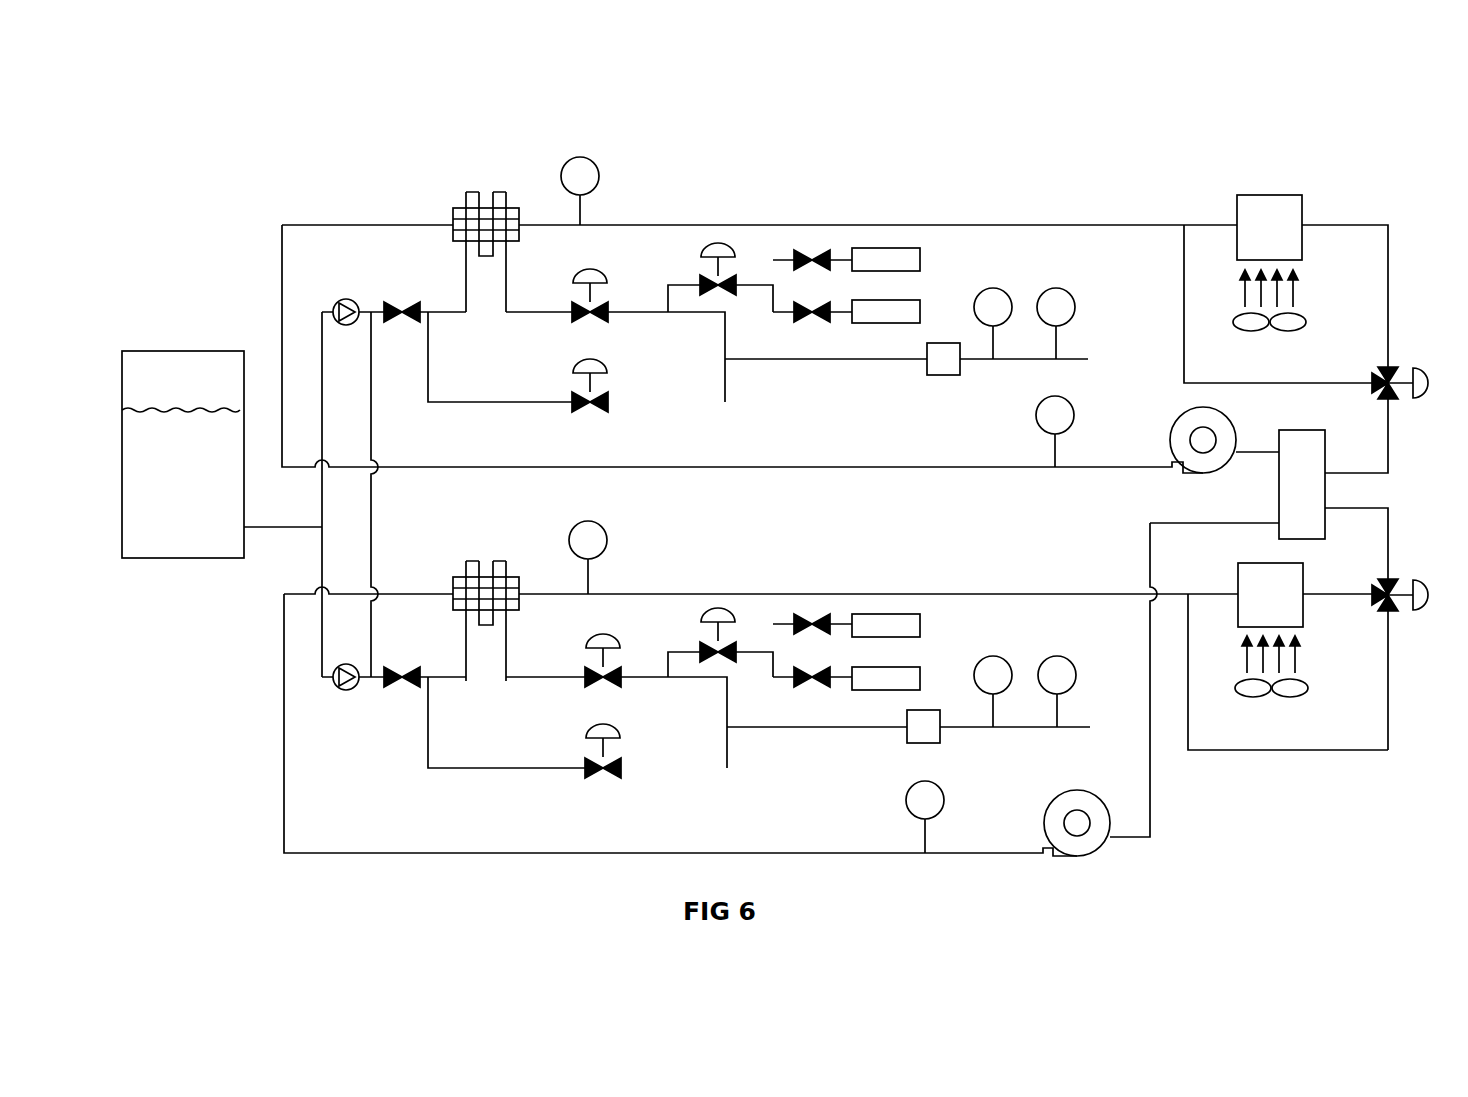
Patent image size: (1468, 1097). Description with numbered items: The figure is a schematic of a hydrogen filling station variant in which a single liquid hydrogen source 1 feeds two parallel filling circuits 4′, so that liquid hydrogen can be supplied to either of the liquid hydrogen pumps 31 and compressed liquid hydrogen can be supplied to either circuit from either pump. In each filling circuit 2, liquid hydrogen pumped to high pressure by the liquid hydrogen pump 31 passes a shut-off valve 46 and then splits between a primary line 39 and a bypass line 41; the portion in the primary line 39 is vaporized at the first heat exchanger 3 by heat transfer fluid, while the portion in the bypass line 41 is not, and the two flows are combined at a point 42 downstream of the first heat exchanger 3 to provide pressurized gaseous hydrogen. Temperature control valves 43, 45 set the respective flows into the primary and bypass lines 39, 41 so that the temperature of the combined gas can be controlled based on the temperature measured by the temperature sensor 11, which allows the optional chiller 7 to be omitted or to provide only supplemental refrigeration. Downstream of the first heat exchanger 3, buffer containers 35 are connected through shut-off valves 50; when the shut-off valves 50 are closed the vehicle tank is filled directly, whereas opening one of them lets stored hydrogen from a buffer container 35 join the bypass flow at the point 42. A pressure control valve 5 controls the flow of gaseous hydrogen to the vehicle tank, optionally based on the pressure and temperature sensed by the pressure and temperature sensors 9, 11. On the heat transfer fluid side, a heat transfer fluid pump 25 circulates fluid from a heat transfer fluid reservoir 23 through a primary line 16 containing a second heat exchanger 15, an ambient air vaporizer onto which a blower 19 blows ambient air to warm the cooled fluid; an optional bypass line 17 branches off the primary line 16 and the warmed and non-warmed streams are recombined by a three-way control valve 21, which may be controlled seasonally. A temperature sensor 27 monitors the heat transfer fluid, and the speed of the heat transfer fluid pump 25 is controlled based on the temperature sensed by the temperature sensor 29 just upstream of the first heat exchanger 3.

The liquid hydrogen source 1 is at (142, 473).
The filling circuit 2 is at (165, 620).
The first heat exchanger 3 is at (490, 205).
The first filling circuit 4′ is at (765, 225).
The pressure control valve 5 is at (715, 252).
The chiller 7 is at (947, 365).
The pressure sensor 9 is at (987, 300).
The temperature sensor 11 is at (1058, 308).
The second heat exchanger 15 is at (1270, 222).
The primary line 16 is at (1213, 225).
The bypass line 17 is at (1183, 272).
The blower 19 is at (1255, 323).
The three-way control valve 21 is at (1393, 372).
The heat transfer fluid reservoir 23 is at (1305, 488).
The heat transfer fluid pump 25 is at (1207, 438).
The temperature sensor 27 is at (1058, 412).
The temperature sensor 29 is at (583, 168).
The liquid hydrogen pump 31 is at (347, 299).
The buffer container 35 is at (873, 253).
The primary line 39 is at (445, 312).
The bypass line 41 is at (518, 402).
The combination point 42 is at (746, 378).
The temperature control valve 43 is at (595, 273).
The temperature control valve 45 is at (595, 362).
The shut-off valve 46 is at (396, 320).
The shut-off valve 50 is at (810, 258).